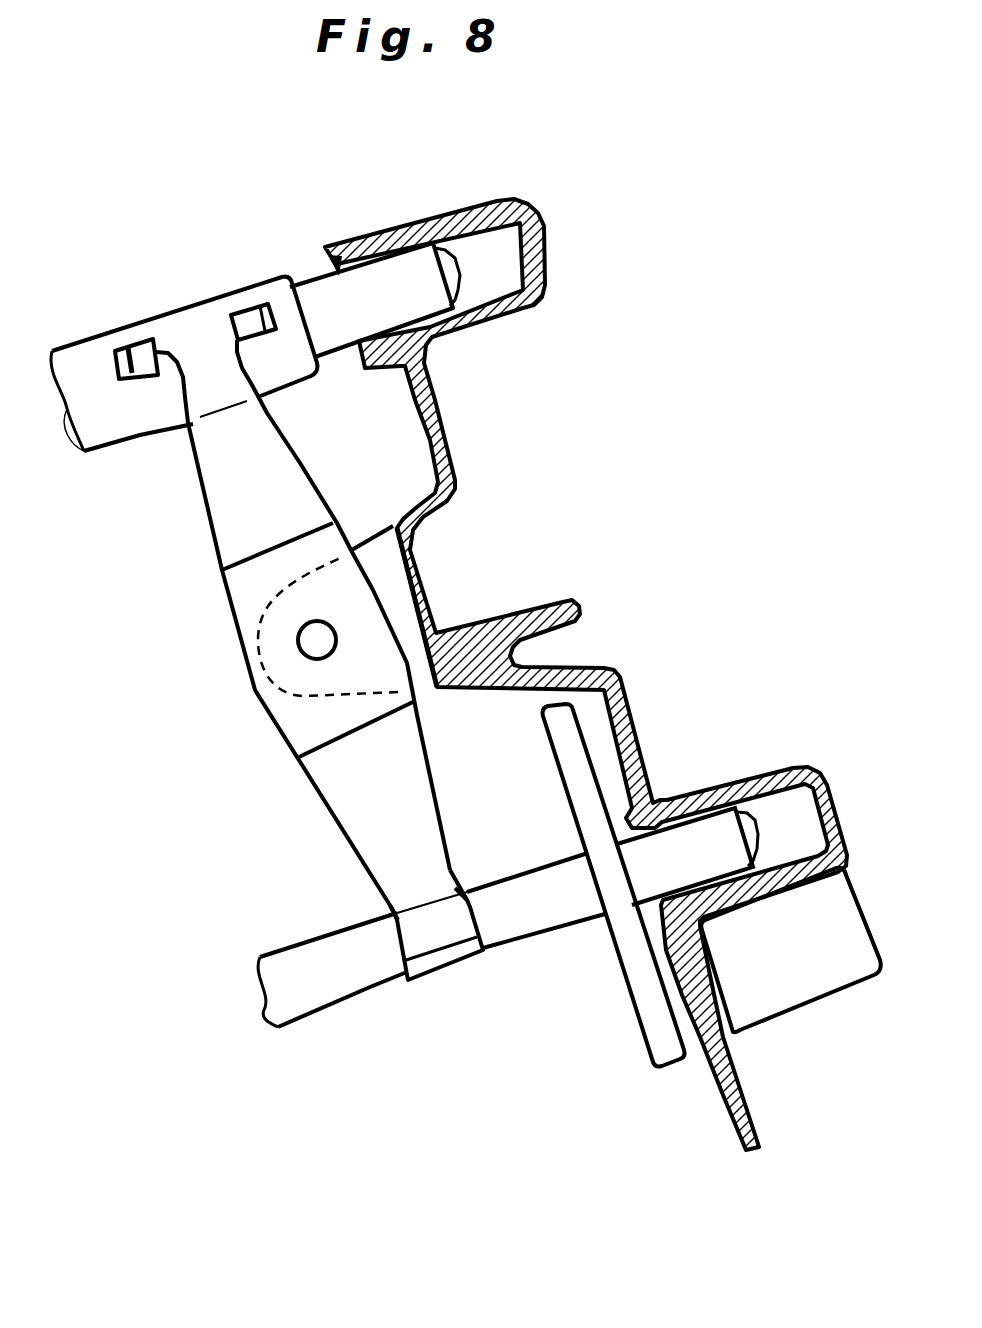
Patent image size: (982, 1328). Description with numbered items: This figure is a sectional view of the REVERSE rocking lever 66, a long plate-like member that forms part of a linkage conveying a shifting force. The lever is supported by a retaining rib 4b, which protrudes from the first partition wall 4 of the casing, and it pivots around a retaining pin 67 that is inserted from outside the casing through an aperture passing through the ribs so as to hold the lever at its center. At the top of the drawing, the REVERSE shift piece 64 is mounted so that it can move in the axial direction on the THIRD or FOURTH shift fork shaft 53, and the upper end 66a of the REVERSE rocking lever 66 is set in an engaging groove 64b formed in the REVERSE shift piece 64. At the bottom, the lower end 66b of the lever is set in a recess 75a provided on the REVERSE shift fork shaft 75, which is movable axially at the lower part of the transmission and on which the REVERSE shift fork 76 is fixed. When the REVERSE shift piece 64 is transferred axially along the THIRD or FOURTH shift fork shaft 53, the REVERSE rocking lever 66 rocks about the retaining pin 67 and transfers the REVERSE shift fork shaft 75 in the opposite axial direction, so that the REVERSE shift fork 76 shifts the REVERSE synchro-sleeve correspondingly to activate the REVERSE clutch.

The first partition wall 4 is at (433, 407).
The retaining rib 4b is at (377, 547).
The THIRD or FOURTH shift fork shaft 53 is at (397, 290).
The REVERSE shift piece 64 is at (72, 363).
The engaging groove 64b is at (182, 425).
The REVERSE rocking lever 66 is at (237, 527).
The upper end 66a is at (198, 340).
The lower end 66b is at (435, 930).
The retaining pin 67 is at (312, 640).
The REVERSE shift fork shaft 75 is at (313, 997).
The recess 75a is at (477, 950).
The REVERSE shift fork 76 is at (648, 1023).